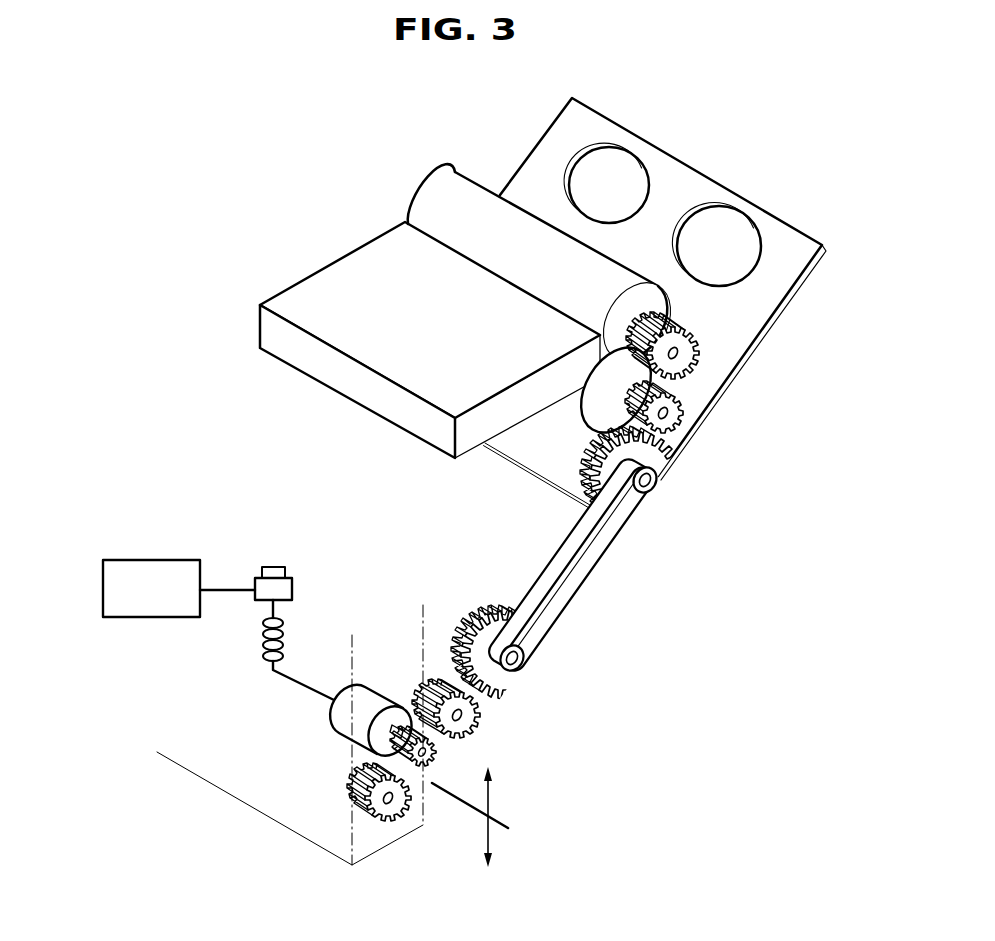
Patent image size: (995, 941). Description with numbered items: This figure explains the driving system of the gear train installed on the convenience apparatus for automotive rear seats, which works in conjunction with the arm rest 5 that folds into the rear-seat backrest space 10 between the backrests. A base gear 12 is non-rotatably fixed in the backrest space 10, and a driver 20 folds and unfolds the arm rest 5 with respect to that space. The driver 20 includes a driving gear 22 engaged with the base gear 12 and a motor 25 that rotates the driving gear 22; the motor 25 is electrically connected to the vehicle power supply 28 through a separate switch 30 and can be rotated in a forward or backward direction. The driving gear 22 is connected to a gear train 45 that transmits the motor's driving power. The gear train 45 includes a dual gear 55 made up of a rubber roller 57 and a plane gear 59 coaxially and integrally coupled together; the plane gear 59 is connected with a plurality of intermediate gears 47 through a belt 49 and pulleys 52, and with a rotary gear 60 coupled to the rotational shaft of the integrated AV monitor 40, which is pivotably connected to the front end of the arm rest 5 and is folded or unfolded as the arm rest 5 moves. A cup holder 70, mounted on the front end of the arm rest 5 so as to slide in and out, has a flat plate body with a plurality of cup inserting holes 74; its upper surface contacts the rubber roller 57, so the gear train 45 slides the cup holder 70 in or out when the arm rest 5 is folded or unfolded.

The arm rest 5 is at (505, 791).
The rear-seat backrest space 10 is at (493, 884).
The base gear 12 is at (390, 817).
The driver 20 is at (310, 684).
The driving gear 22 is at (440, 750).
The motor 25 is at (375, 700).
The power supply 28 is at (103, 558).
The switch 30 is at (272, 570).
The integrated AV monitor 40 is at (312, 298).
The gear train 45 is at (618, 572).
The intermediate gears 47 is at (643, 455).
The belt 49 is at (557, 600).
The pulleys 52 is at (657, 480).
The dual gear 55 is at (546, 429).
The rubber roller 57 is at (607, 403).
The plane gear 59 is at (673, 405).
The rotary gear 60 is at (685, 352).
The cup holder 70 is at (733, 323).
The cup inserting holes 74 is at (733, 243).